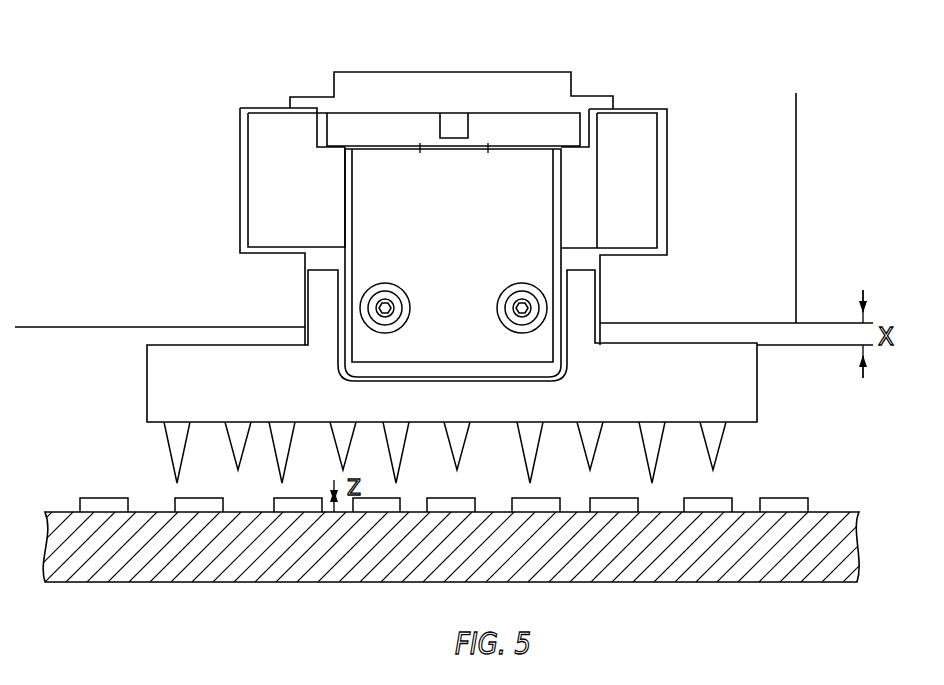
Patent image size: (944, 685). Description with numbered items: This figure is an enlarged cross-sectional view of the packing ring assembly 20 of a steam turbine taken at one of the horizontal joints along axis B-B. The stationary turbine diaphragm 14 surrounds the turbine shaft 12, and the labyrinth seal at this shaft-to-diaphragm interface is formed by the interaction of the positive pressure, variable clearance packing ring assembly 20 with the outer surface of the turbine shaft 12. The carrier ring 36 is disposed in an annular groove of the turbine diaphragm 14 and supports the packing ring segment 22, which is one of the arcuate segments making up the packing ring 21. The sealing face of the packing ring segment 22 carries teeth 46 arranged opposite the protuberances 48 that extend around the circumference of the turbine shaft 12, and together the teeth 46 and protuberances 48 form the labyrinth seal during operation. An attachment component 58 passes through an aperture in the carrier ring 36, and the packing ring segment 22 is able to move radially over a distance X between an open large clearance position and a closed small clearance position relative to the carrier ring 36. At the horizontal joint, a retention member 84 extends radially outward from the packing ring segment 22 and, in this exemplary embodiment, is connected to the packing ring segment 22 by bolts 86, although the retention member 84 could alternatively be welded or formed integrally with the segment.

The turbine shaft 12 is at (731, 559).
The turbine diaphragm 14 is at (135, 242).
The packing ring assembly 20 is at (240, 118).
The packing ring 21 is at (146, 402).
The packing ring segment 22 is at (252, 386).
The carrier ring 36 is at (307, 194).
The teeth 46 is at (720, 442).
The protuberances 48 is at (797, 498).
The attachment component 58 is at (523, 113).
The retention member 84 is at (557, 233).
The bolts 86 is at (545, 318).